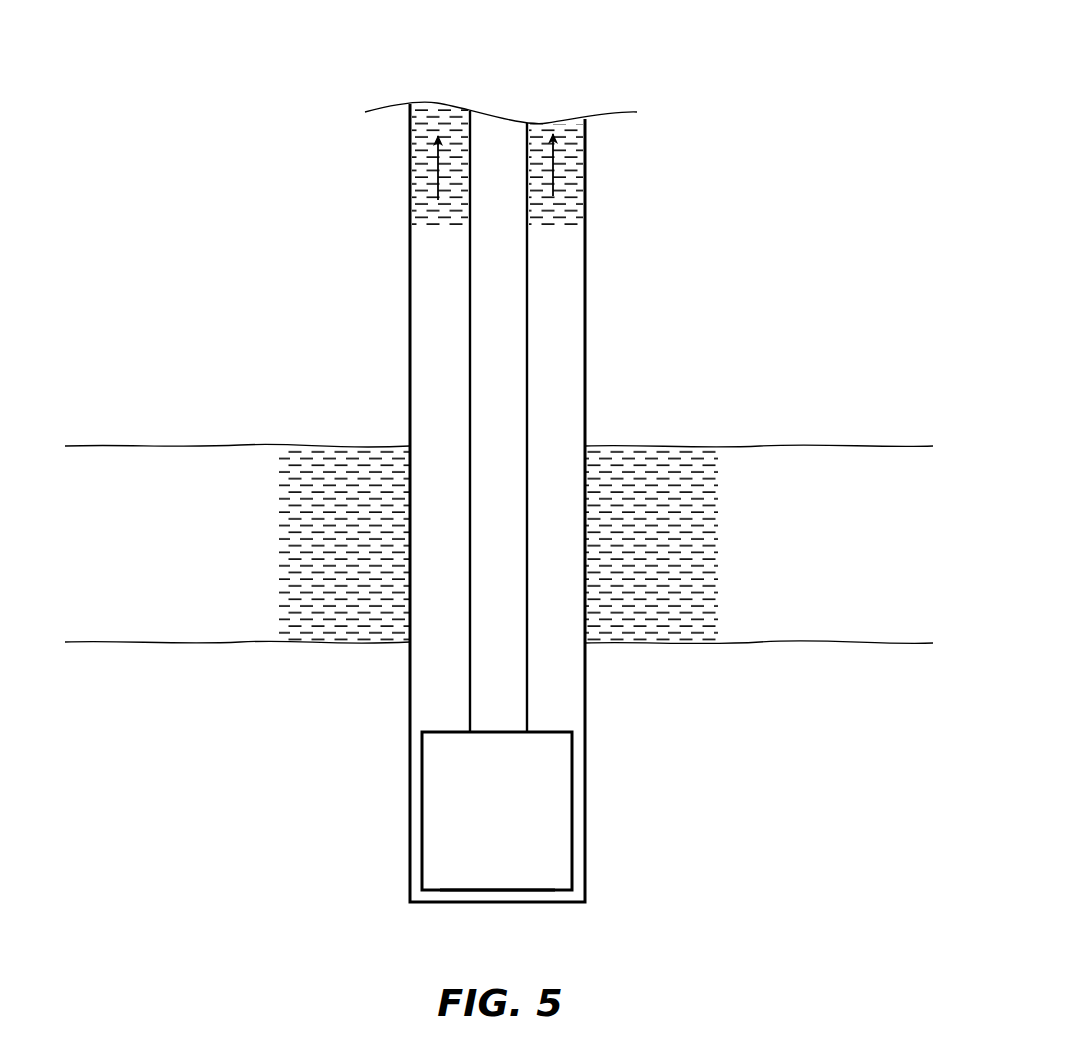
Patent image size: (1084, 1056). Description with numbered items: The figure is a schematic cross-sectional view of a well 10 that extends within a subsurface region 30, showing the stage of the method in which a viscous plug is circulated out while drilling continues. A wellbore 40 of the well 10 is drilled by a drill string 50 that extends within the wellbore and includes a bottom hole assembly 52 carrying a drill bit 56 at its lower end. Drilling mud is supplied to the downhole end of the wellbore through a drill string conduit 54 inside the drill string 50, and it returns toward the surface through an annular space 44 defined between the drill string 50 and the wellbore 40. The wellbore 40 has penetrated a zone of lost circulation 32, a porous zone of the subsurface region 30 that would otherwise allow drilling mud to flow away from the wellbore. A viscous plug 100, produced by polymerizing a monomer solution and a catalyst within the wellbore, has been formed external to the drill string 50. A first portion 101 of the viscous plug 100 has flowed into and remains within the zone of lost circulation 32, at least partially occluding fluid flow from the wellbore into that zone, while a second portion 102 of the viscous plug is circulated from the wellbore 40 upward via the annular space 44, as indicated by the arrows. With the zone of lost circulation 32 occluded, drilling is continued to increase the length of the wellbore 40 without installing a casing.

The well 10 is at (311, 81).
The subsurface region 30 is at (208, 203).
The zone of lost circulation 32 is at (174, 456).
The wellbore 40 is at (410, 270).
The annular space 44 is at (555, 327).
The drill string 50 is at (533, 693).
The bottom hole assembly 52 is at (419, 759).
The drill string conduit 54 is at (510, 253).
The drill bit 56 is at (483, 891).
The viscous plug 100 is at (572, 152).
The first portion of viscous plug 101 is at (300, 512).
The second portion of viscous plug 102 is at (568, 188).